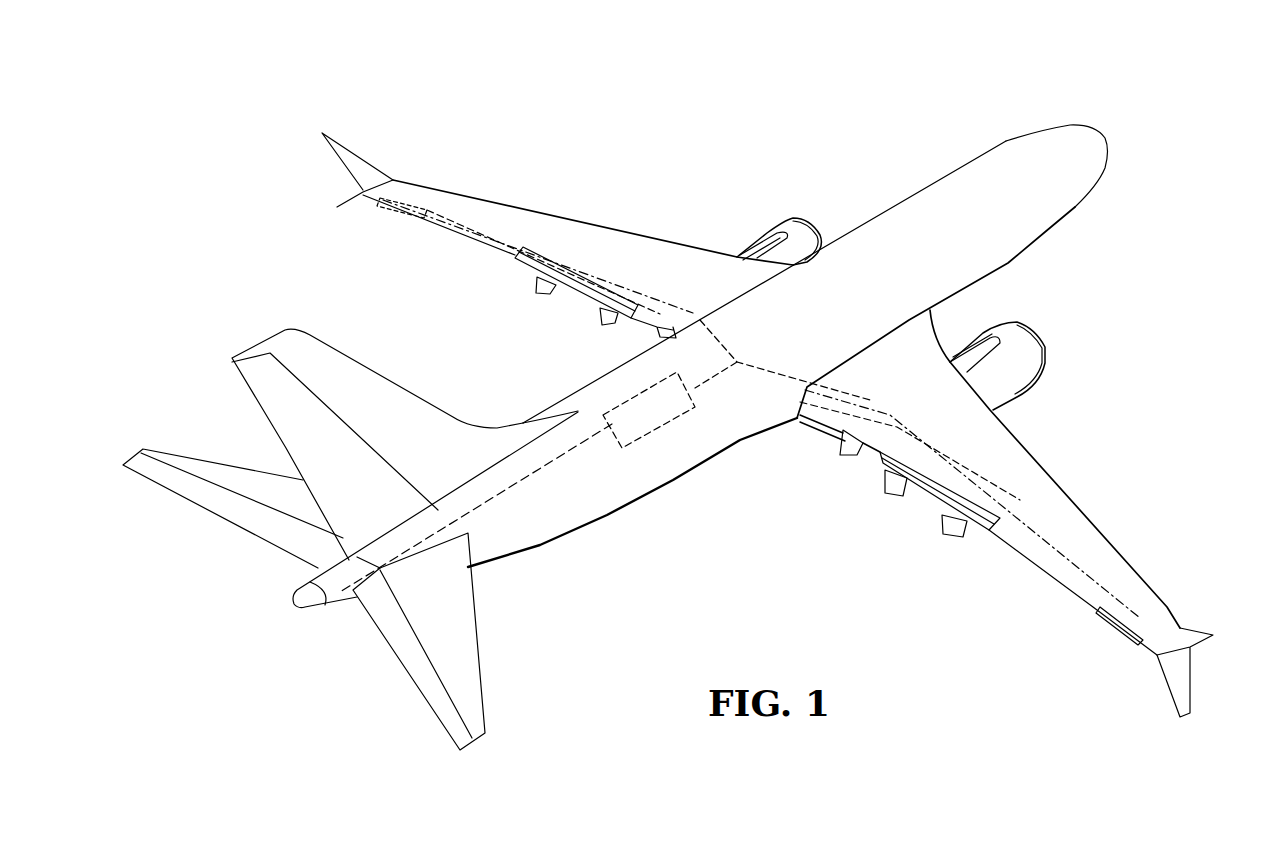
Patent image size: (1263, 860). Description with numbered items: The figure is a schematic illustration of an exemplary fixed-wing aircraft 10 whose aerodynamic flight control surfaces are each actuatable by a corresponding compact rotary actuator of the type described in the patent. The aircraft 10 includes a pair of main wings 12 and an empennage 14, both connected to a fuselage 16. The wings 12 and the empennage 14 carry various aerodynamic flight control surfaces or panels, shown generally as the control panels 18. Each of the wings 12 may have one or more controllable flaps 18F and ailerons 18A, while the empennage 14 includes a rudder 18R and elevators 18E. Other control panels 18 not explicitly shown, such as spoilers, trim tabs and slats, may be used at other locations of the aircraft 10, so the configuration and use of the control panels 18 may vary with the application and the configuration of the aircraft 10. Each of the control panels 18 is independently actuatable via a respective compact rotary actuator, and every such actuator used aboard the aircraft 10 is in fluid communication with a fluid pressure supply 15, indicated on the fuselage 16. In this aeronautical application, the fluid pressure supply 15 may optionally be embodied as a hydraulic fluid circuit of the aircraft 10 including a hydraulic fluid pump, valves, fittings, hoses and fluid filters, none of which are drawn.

The aircraft 10 is at (1143, 97).
The main wings 12 is at (630, 262).
The empennage 14 is at (245, 327).
The fluid pressure supply 15 is at (662, 421).
The fuselage 16 is at (852, 306).
The aerodynamic flight control surfaces 18 is at (800, 525).
The ailerons 18A is at (1117, 622).
The elevators 18E is at (403, 210).
The flaps 18F is at (577, 276).
The rudder 18R is at (350, 472).